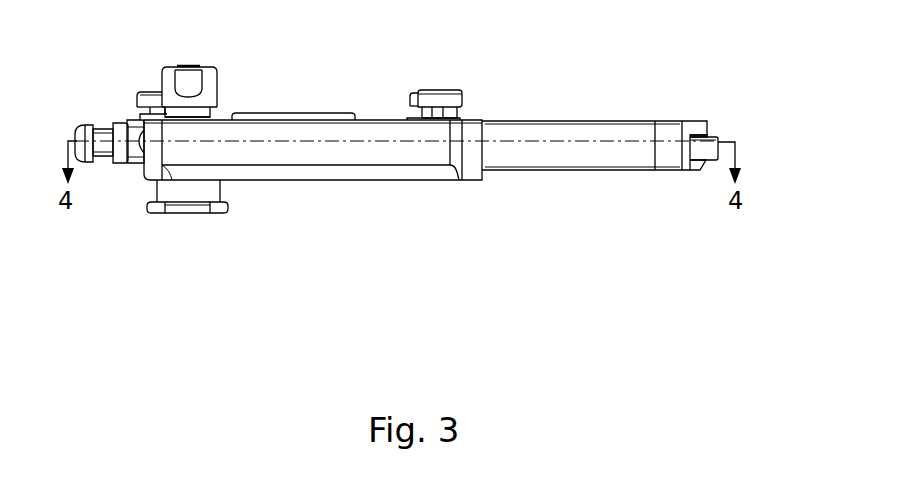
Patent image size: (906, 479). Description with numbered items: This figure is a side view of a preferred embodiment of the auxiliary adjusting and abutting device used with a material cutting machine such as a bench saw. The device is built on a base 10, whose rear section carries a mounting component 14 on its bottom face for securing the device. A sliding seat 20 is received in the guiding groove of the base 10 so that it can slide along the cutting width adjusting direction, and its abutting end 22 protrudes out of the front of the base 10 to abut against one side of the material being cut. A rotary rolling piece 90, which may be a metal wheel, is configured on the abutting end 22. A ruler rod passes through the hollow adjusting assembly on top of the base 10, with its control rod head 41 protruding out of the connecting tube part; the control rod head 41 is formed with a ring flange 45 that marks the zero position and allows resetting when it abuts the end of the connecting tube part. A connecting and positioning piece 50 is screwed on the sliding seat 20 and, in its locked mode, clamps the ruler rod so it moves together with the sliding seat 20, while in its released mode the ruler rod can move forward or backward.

The base 10 is at (375, 115).
The mounting component 14 is at (233, 214).
The sliding seat 20 is at (552, 116).
The abutting end 22 is at (707, 124).
The control rod head 41 is at (103, 126).
The ring flange 45 is at (121, 122).
The connecting and positioning piece 50 is at (464, 86).
The rotary rolling piece 90 is at (718, 136).